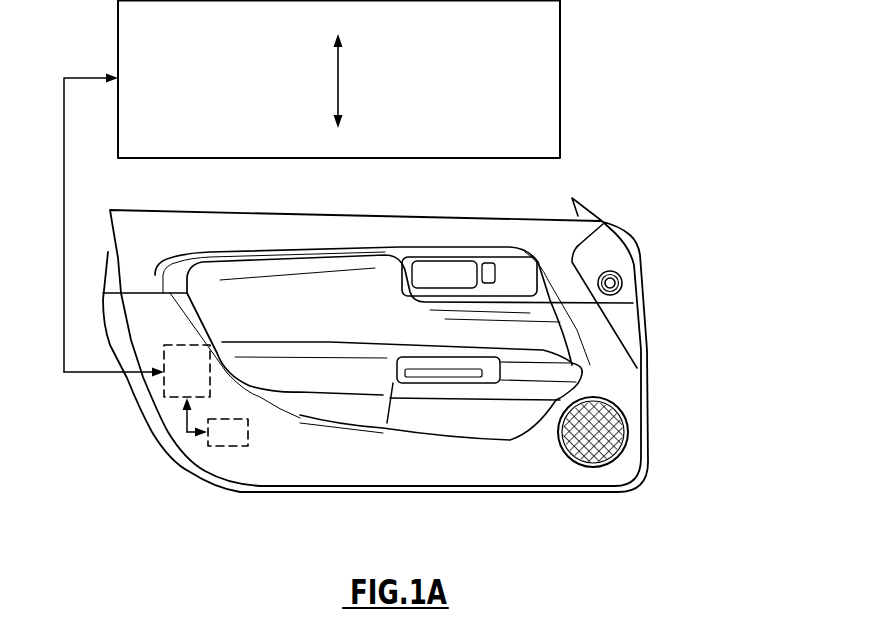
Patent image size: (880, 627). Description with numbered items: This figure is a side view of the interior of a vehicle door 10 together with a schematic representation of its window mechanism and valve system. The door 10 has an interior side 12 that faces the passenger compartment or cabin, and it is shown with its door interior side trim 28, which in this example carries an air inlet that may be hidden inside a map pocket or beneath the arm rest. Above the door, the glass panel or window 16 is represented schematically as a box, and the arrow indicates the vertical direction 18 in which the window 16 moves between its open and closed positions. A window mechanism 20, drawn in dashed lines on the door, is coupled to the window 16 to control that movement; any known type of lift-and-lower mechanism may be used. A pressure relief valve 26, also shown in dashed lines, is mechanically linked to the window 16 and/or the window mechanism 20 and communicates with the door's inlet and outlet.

The door 10 is at (692, 302).
The interior side 12 is at (615, 383).
The window 16 is at (560, 55).
The vertical direction 18 is at (339, 78).
The window mechanism 20 is at (162, 345).
The pressure relief valve 26 is at (213, 447).
The door interior side trim 28 is at (333, 436).